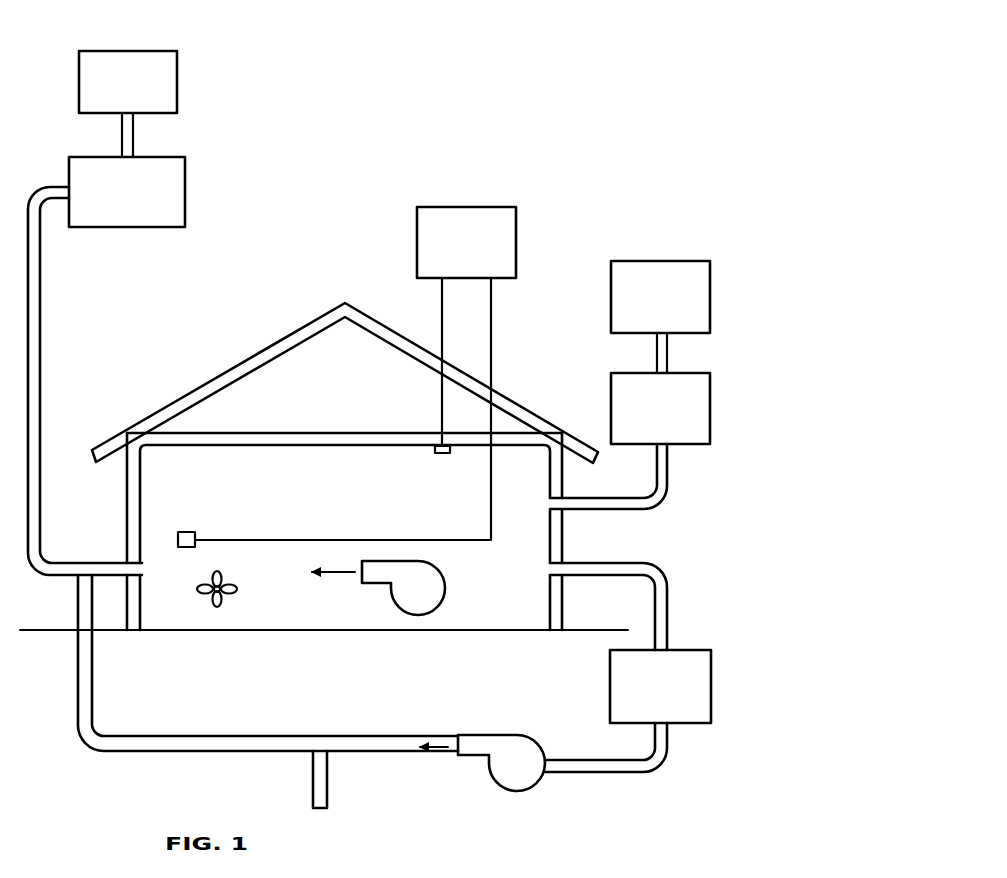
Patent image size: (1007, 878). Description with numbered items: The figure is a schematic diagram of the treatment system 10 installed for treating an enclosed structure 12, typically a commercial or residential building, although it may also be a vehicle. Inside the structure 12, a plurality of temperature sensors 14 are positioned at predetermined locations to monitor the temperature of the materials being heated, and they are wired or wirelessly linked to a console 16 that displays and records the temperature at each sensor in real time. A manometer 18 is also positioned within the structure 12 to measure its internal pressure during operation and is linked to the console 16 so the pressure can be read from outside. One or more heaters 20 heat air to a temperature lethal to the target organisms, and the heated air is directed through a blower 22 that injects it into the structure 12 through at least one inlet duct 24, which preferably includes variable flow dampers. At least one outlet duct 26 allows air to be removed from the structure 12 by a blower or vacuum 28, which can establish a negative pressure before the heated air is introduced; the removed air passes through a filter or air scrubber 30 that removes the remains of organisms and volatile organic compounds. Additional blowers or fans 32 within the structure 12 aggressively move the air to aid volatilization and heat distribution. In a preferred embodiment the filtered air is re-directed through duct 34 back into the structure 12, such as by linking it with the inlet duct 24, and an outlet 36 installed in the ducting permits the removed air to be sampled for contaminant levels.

The system 10 is at (625, 86).
The enclosed structure 12 is at (280, 338).
The temperature sensors 14 is at (184, 532).
The console 16 is at (450, 207).
The manometer 18 is at (435, 453).
The heater 20 is at (177, 75).
The blower 22 is at (185, 182).
The inlet duct 24 is at (40, 350).
The outlet duct 26 is at (668, 605).
The vacuum 28 is at (518, 780).
The filter or air scrubber 30 is at (711, 682).
The blowers or fans 32 is at (207, 597).
The duct 34 is at (97, 750).
The outlet 36 is at (328, 777).